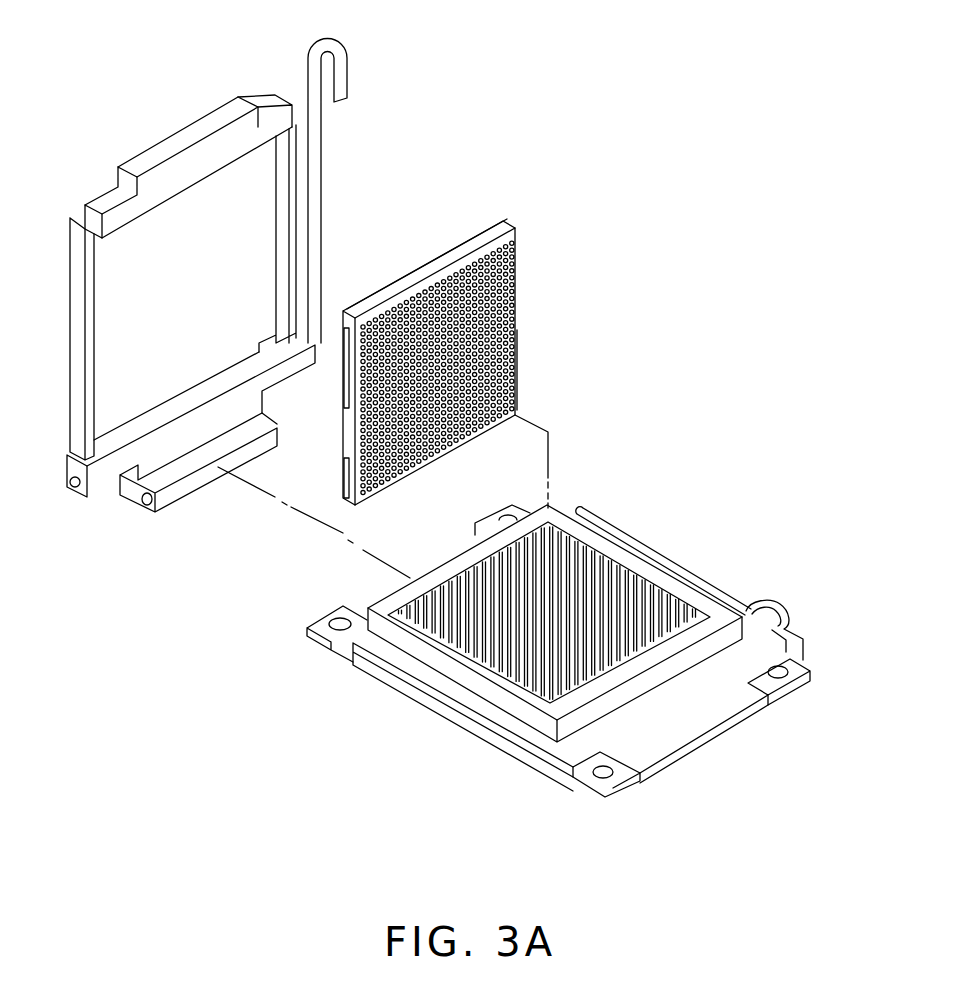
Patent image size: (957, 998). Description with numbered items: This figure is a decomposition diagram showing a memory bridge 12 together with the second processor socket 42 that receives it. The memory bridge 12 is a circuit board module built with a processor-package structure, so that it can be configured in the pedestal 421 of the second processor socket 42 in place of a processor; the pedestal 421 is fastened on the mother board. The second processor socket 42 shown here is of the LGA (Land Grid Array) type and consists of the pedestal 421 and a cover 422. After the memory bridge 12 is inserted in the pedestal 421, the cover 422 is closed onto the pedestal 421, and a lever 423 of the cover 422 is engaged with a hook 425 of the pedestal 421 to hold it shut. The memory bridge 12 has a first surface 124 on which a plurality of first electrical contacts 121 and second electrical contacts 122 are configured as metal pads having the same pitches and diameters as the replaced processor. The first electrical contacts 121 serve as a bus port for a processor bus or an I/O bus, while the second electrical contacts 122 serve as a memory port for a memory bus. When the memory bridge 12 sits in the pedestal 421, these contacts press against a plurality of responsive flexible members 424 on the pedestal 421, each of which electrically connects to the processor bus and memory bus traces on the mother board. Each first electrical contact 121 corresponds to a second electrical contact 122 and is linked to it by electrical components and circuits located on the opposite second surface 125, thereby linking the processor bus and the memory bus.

The memory bridge 12 is at (506, 313).
The first electrical contacts 121 is at (430, 266).
The second electrical contacts 122 is at (440, 466).
The first surface 124 is at (513, 348).
The second surface 125 is at (492, 216).
The second processor socket 42 is at (253, 387).
The pedestal 421 is at (498, 651).
The cover 422 is at (141, 505).
The lever 423 is at (352, 72).
The flexible members 424 is at (670, 592).
The hook 425 is at (780, 618).